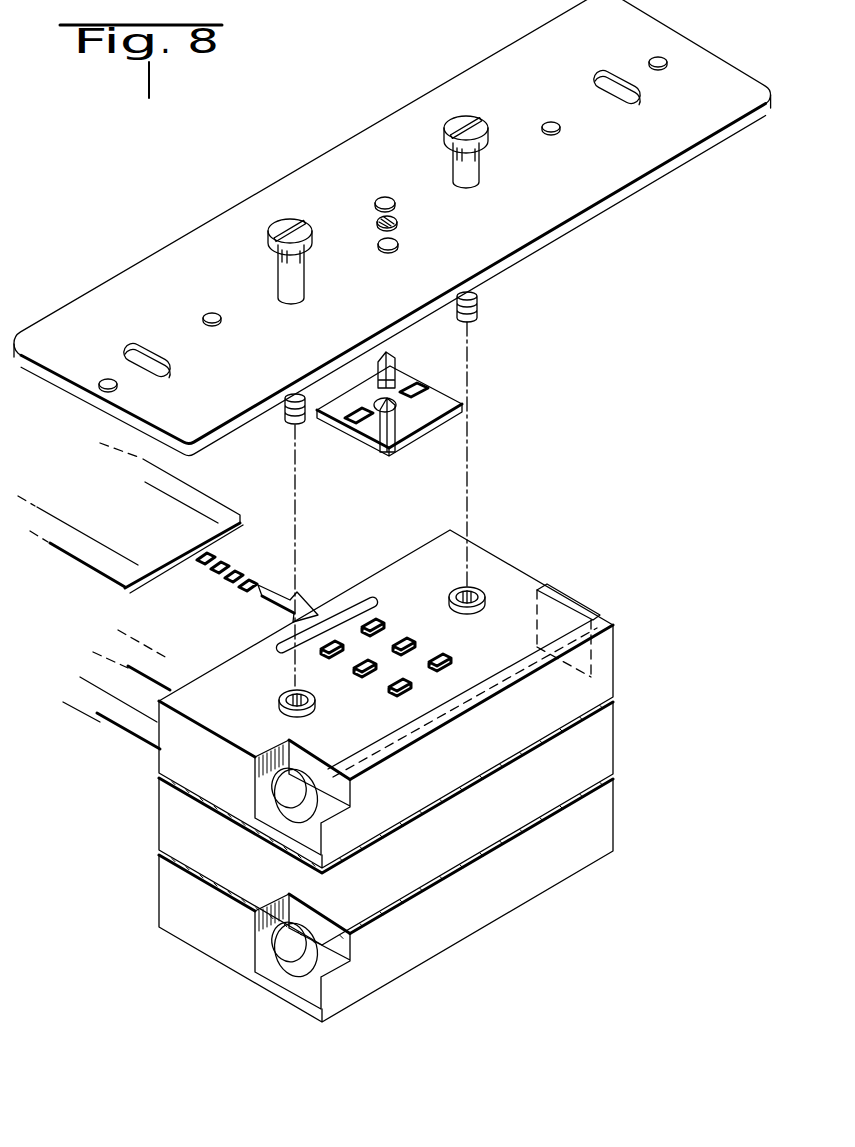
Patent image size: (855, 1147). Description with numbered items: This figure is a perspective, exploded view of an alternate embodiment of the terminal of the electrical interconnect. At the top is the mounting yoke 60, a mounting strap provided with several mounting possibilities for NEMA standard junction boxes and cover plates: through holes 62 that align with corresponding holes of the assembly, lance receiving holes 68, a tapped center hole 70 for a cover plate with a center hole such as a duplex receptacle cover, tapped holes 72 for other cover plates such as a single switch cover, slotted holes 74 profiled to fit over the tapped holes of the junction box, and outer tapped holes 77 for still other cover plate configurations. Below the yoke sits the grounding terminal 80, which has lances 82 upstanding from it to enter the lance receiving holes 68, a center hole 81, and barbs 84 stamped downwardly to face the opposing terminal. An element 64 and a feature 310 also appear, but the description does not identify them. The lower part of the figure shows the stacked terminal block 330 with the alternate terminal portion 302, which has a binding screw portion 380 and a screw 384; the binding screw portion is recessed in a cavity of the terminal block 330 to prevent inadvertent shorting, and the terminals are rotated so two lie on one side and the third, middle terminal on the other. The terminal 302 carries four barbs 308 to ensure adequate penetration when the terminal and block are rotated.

The mounting yoke 60 is at (357, 174).
The through holes 62 is at (292, 300).
The screw head 64 is at (270, 230).
The lance receiving holes 68 is at (388, 197).
The tapped center hole 70 is at (398, 222).
The tapped holes 72 is at (212, 311).
The slotted holes 74 is at (151, 352).
The tapped holes 77 is at (105, 377).
The grounding terminal 80 is at (428, 418).
The center hole 81 is at (392, 398).
The lances 82 is at (398, 362).
The barbs 84 is at (430, 390).
The terminal portion 302 is at (524, 632).
The barbs 308 is at (372, 618).
The contact 310 is at (400, 645).
The terminal block 330 is at (517, 571).
The binding screw portion 380 is at (326, 787).
The screw 384 is at (288, 787).